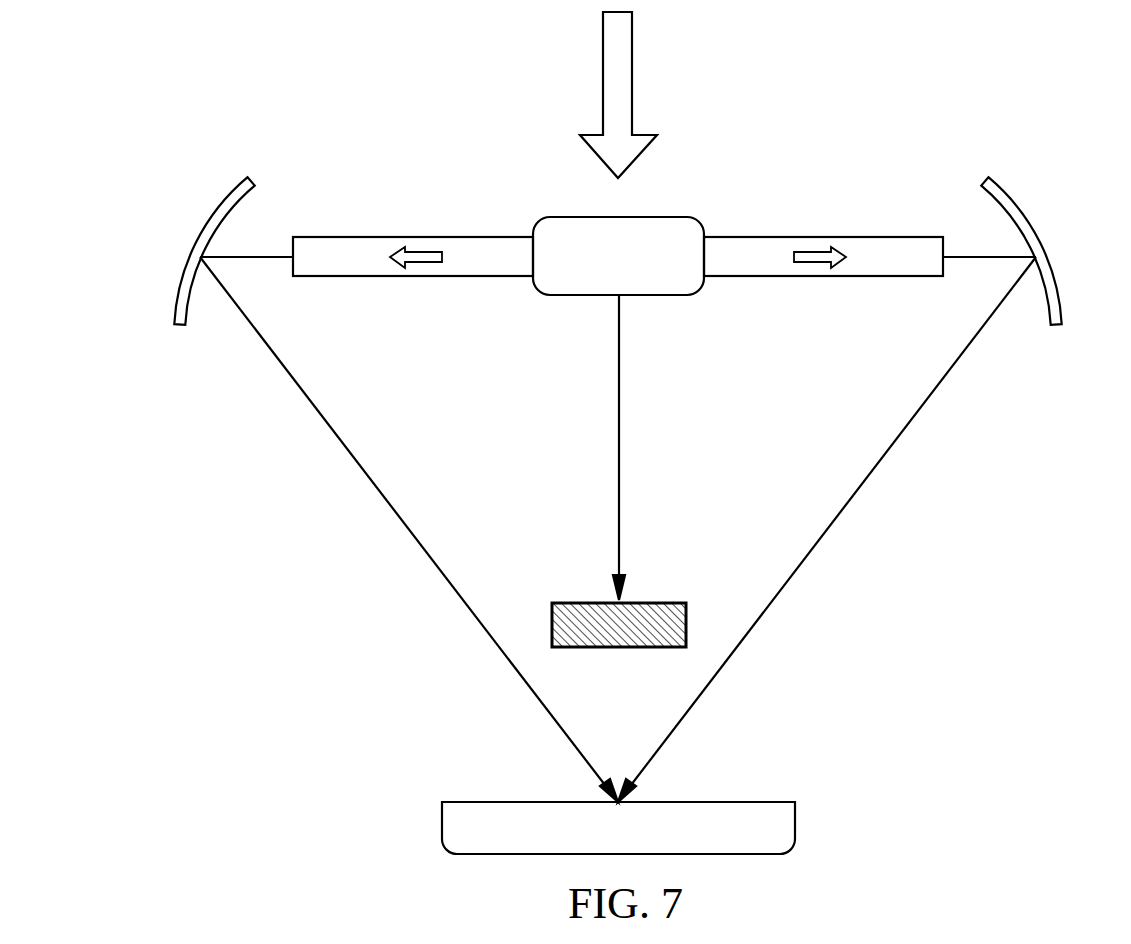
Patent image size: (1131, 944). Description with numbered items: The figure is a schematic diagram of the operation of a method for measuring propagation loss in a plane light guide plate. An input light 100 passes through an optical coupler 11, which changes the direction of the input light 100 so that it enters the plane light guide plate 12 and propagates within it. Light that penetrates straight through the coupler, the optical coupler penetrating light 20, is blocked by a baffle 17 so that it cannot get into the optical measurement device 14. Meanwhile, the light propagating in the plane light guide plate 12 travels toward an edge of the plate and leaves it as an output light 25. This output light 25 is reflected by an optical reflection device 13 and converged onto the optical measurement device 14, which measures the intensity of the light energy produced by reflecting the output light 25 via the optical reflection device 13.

The input light 100 is at (625, 60).
The optical coupler 11 is at (663, 217).
The plane light guide plate 12 is at (370, 237).
The optical reflection device 13 is at (237, 192).
The output light 25 is at (238, 253).
The optical coupler penetrating light 20 is at (619, 427).
The baffle 17 is at (658, 603).
The optical measurement device 14 is at (795, 817).